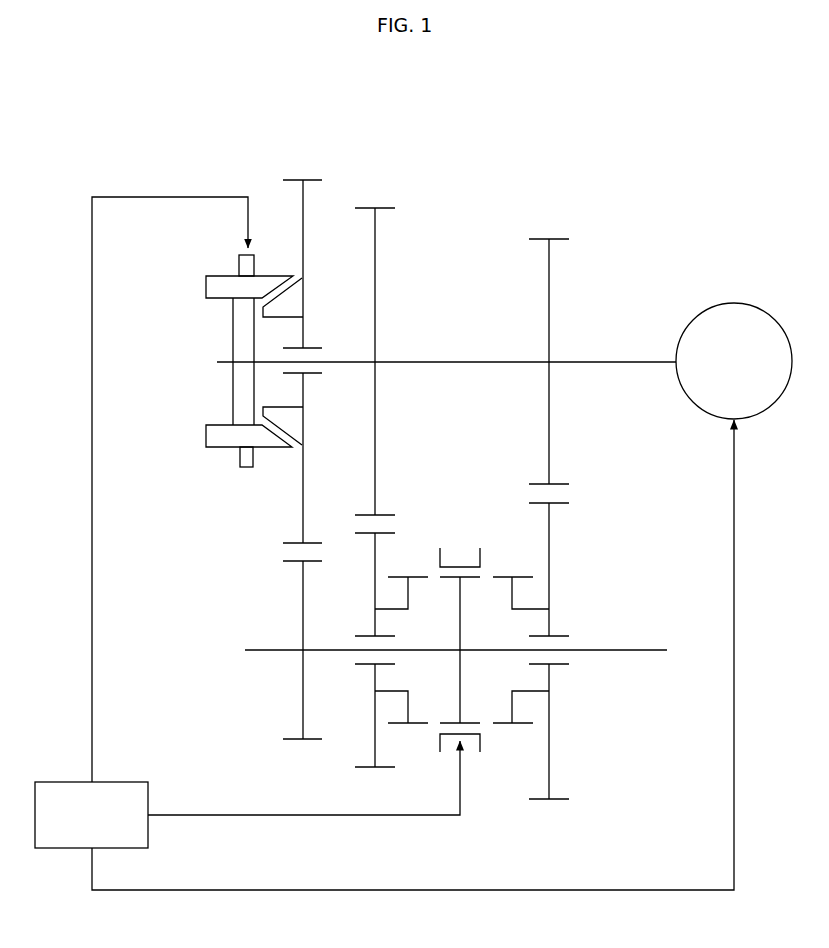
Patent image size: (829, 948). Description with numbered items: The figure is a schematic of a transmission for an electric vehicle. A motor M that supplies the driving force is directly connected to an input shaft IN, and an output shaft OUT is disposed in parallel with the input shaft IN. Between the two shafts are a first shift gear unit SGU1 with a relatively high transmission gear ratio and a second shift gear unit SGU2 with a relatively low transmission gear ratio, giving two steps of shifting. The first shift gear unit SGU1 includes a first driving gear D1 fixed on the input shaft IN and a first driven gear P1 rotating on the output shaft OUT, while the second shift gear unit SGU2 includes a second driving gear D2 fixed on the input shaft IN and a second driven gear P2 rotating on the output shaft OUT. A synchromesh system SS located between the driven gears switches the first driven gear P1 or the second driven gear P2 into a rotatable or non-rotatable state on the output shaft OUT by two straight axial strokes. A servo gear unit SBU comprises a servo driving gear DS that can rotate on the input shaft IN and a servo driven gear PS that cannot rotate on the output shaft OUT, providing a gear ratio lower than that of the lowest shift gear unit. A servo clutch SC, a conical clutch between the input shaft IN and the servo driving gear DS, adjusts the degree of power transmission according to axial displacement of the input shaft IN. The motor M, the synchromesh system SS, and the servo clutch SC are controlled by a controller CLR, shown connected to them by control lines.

The servo gear unit SBU is at (278, 171).
The second shift gear unit SGU2 is at (403, 200).
The first shift gear unit SGU1 is at (577, 229).
The input shaft IN is at (630, 360).
The output shaft OUT is at (638, 652).
The motor M is at (734, 361).
The controller CLR is at (384, 543).
The servo driving gear DS is at (302, 355).
The servo driven gear PS is at (302, 666).
The servo clutch SC is at (206, 451).
The second driving gear D2 is at (391, 406).
The second driven gear P2 is at (391, 730).
The first driving gear D1 is at (531, 422).
The first driven gear P1 is at (531, 746).
The synchromesh system SS is at (478, 755).